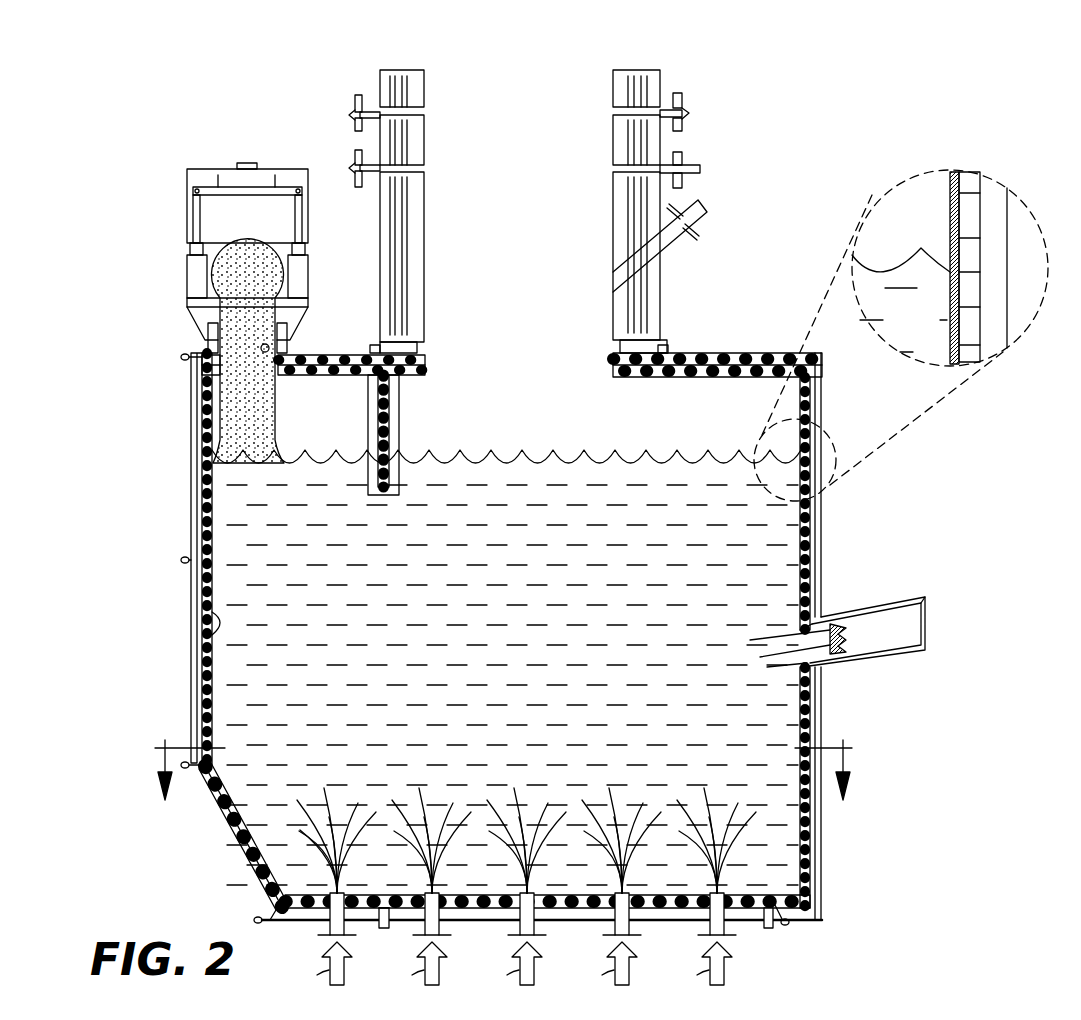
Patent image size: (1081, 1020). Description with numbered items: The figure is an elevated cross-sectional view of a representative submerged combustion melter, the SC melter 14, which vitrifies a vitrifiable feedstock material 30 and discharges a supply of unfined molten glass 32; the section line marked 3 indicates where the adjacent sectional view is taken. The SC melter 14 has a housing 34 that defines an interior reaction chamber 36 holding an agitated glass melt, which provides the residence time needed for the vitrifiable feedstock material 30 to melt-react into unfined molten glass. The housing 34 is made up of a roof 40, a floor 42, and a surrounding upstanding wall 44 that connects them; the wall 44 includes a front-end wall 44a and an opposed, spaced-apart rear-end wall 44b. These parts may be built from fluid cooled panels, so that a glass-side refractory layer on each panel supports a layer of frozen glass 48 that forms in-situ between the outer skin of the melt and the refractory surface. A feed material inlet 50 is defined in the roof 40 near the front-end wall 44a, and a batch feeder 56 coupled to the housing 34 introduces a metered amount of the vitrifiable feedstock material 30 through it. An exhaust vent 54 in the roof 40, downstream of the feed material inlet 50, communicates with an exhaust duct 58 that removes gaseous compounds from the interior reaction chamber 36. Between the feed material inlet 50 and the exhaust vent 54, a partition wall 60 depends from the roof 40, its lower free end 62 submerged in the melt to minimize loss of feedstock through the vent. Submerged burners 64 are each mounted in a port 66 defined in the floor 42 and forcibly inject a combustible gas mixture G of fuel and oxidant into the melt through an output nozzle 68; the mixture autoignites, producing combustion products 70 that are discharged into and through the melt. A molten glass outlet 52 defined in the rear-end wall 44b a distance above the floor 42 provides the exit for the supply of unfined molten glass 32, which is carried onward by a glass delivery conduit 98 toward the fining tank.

The SC melter 14 is at (176, 146).
The batch feeder 56 is at (210, 222).
The feed material inlet 50 is at (268, 345).
The vitrifiable feedstock material 30 is at (277, 412).
The exhaust duct 58 is at (415, 215).
The exhaust vent 54 is at (425, 358).
The partition wall 60 is at (385, 420).
The lower free end 62 is at (380, 495).
The roof 40 is at (695, 360).
The housing 34 is at (190, 408).
The surrounding upstanding wall 44 is at (190, 592).
The front-end wall 44a is at (197, 692).
The rear-end wall 44b is at (815, 510).
The interior reaction chamber 36 is at (212, 628).
The layer of frozen glass 48 is at (950, 222).
The molten glass outlet 52 is at (820, 633).
The glass delivery conduit 98 is at (895, 600).
The supply of unfined molten glass 32 is at (775, 665).
The floor 42 is at (468, 915).
The submerged burners 64 is at (350, 930).
The port 66 is at (330, 935).
The output nozzle 68 is at (330, 888).
The combustion products 70 is at (361, 838).
The section line 3- 3 is at (504, 793).